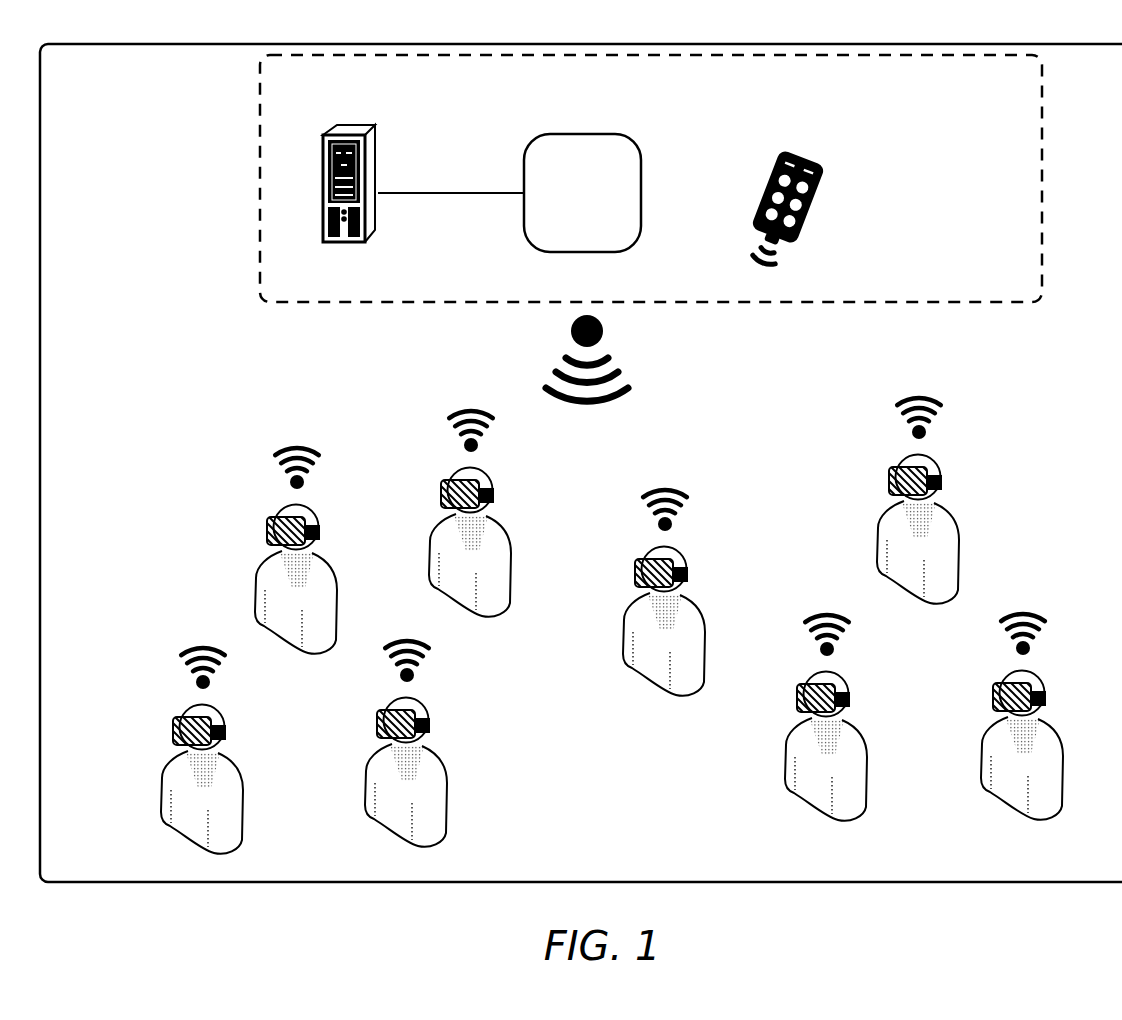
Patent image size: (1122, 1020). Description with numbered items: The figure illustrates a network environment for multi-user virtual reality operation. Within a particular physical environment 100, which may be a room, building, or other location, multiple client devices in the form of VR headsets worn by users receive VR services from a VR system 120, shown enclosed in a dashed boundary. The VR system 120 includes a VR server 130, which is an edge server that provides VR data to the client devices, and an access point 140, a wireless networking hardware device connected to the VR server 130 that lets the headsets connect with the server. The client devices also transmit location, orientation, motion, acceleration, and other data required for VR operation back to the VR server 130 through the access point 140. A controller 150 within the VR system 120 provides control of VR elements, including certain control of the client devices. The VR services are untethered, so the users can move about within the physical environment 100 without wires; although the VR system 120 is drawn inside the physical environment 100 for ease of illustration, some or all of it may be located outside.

The physical environment 100 is at (121, 77).
The VR system 120 is at (651, 178).
The VR server 130 is at (372, 160).
The access point 140 is at (643, 152).
The controller 150 is at (820, 187).